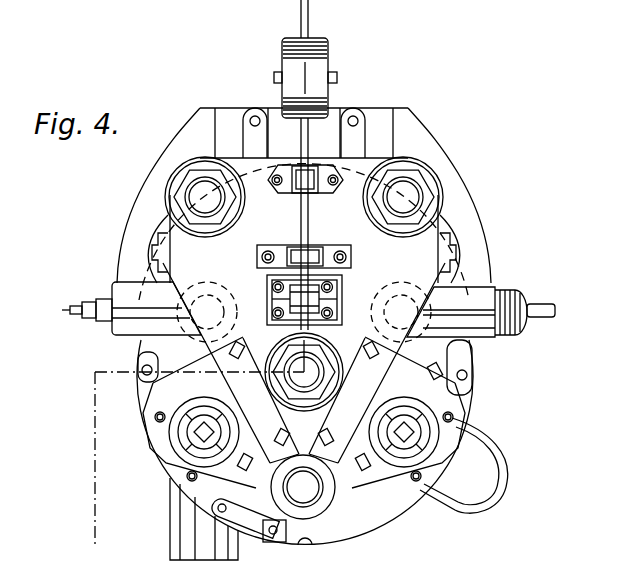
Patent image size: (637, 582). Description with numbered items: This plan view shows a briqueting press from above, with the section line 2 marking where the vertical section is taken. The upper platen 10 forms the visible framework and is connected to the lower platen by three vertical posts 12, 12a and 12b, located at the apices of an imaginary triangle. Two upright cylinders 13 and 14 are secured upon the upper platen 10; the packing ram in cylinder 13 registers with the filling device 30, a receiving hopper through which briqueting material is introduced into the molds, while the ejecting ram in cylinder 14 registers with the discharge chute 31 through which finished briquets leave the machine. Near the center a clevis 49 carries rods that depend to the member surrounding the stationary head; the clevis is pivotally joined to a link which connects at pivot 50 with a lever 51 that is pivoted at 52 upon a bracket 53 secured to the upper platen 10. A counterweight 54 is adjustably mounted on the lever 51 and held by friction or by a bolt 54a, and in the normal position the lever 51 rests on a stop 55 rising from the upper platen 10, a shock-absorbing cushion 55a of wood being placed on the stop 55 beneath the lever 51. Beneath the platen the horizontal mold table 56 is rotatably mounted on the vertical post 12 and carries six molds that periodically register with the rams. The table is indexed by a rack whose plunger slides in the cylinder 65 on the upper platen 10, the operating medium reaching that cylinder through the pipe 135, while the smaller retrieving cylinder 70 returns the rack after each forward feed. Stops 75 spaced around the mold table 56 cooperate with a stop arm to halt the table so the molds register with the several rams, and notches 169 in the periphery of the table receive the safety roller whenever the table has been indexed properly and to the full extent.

The section line 2— 2 is at (295, 9).
The upper platen 10 is at (304, 326).
The vertical post 12 is at (312, 368).
The vertical post 12a is at (420, 197).
The vertical post 12b is at (193, 195).
The upright cylinder 13 is at (430, 443).
The upright cylinder 14 is at (183, 455).
The filling device 30 is at (493, 430).
The discharge chute 31 is at (172, 535).
The clevis 49 is at (352, 256).
The pivot 50 is at (318, 246).
The lever 51 is at (301, 212).
The pivot 52 is at (340, 298).
The bracket 53 is at (272, 298).
The counterweight 54 is at (325, 60).
The bolt 54a is at (339, 78).
The stop 55 is at (322, 187).
The shock-absorbing cushion 55a is at (308, 166).
The mold table 56 is at (147, 348).
The cylinder 65 is at (513, 290).
The retrieving cylinder 70 is at (131, 308).
The stop 75 is at (287, 528).
The pipe 135 is at (545, 322).
The notch 169 is at (300, 541).